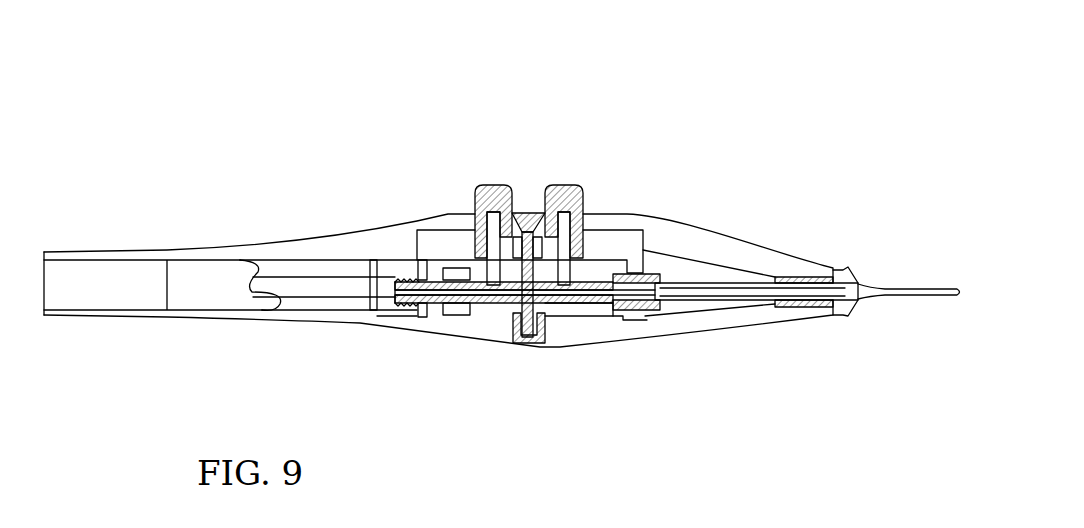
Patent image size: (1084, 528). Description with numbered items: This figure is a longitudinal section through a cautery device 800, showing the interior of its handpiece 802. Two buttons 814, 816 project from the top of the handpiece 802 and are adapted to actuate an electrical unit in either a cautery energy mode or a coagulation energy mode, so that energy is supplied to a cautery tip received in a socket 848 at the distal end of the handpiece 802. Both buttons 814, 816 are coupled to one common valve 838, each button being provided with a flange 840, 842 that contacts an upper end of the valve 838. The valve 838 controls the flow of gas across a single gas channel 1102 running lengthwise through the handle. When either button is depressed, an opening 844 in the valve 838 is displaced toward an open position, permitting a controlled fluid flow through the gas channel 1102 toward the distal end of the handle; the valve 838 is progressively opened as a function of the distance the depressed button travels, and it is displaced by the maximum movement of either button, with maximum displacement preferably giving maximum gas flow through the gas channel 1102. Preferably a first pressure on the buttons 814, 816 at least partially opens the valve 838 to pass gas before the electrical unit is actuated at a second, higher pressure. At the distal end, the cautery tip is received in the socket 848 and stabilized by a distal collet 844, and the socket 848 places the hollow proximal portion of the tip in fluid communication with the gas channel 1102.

The cautery device 800 is at (403, 134).
The handpiece 802 is at (333, 240).
The button 814 is at (490, 185).
The button 816 is at (565, 195).
The flange 840 is at (522, 228).
The flange 842 is at (537, 228).
The valve 838 is at (519, 282).
The gas channel 1102 is at (408, 307).
The opening / distal collet 844 is at (813, 280).
The socket 848 is at (664, 305).